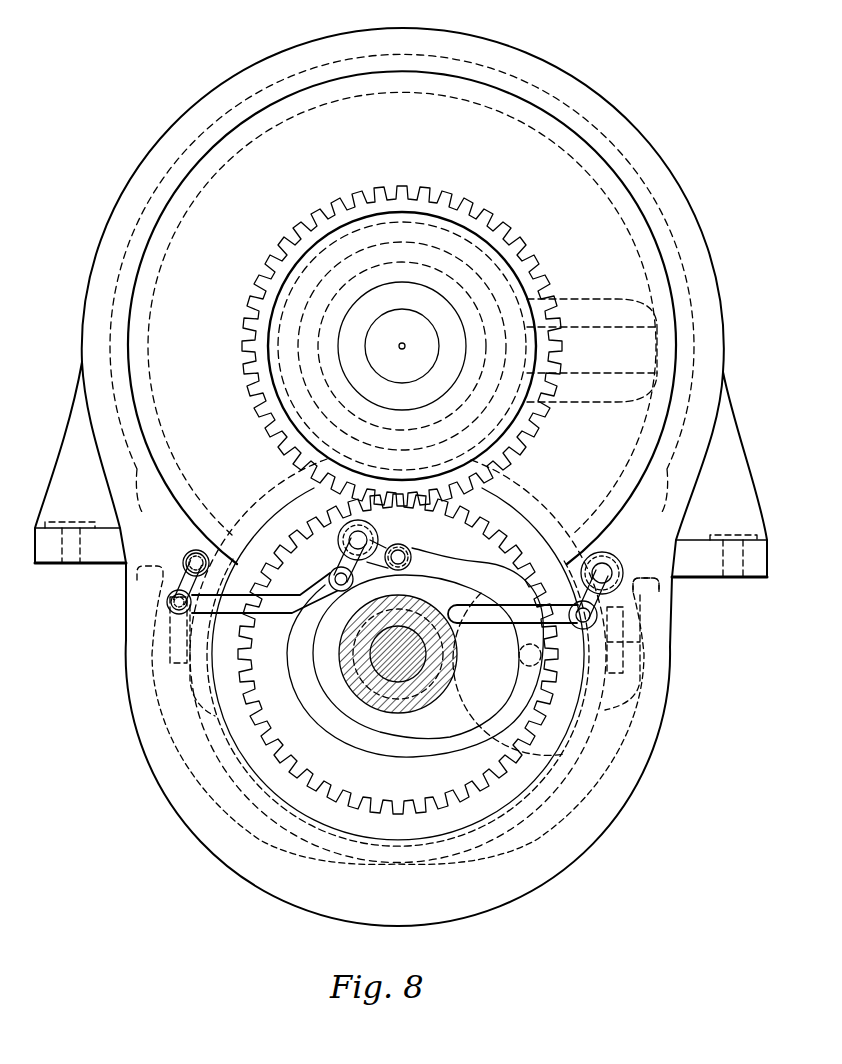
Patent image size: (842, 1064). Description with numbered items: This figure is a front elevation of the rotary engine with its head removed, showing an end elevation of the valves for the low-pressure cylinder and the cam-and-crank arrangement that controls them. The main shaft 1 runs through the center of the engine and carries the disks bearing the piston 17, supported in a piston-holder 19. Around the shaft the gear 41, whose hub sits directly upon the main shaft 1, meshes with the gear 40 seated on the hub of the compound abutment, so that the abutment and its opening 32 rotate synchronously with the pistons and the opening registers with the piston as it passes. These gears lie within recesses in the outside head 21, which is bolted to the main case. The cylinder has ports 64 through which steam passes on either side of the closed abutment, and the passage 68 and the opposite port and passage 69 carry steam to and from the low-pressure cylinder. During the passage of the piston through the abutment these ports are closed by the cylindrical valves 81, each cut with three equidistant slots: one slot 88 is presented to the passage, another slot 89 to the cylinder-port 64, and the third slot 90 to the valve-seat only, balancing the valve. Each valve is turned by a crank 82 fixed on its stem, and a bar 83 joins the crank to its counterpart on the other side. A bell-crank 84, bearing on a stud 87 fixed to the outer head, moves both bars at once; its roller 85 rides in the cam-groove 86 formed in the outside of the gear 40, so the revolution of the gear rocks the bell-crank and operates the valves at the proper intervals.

The main shaft 1 is at (388, 323).
The piston 17 is at (617, 362).
The piston-holder 19 is at (601, 299).
The outside head 21 is at (708, 274).
The valve or opening in abutment 32 is at (560, 718).
The gear 40 is at (403, 810).
The gear 41 is at (408, 194).
The cylinder port 64 is at (232, 535).
The passage 68 is at (650, 640).
The port and passage 69 is at (172, 641).
The cylindrical valve 81 is at (201, 551).
The crank 82 is at (170, 597).
The bar 83 is at (232, 613).
The bell-crank 84 is at (382, 540).
The roller 85 is at (411, 549).
The cam-groove 86 is at (455, 563).
The stud 87 is at (350, 542).
The valve slot 88 is at (628, 588).
The valve slot 89 is at (591, 560).
The valve slot 90 is at (619, 568).